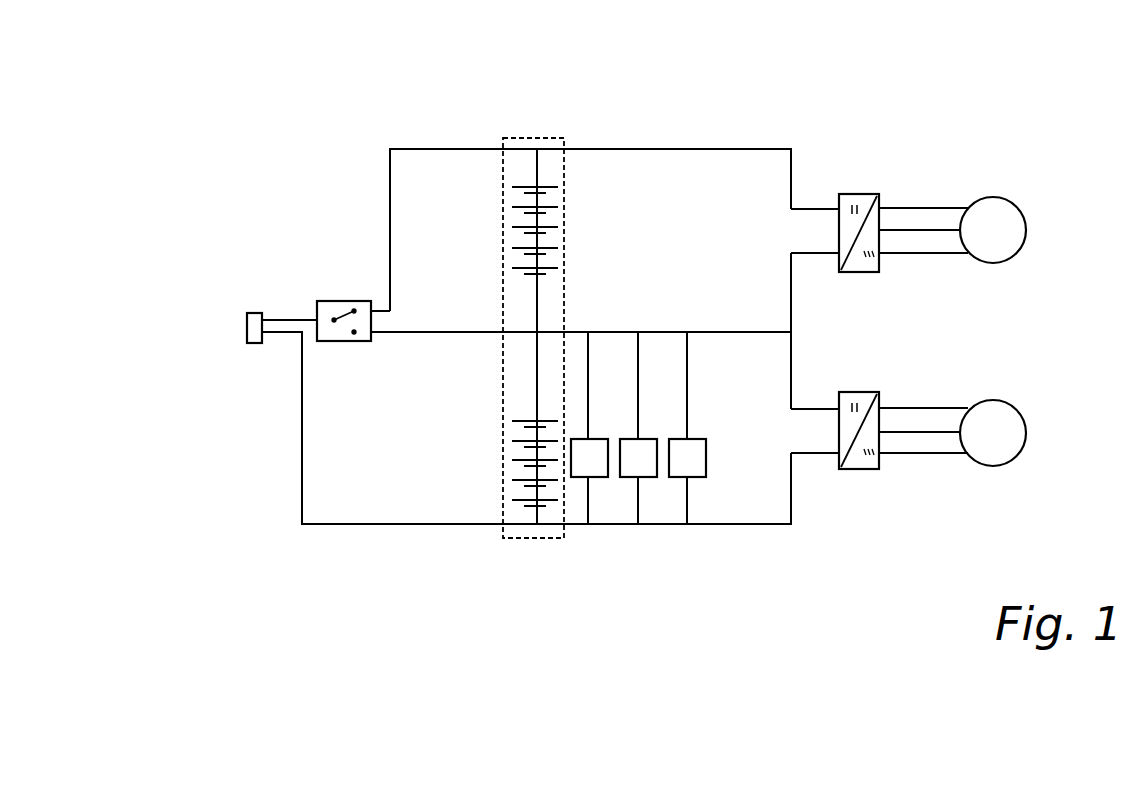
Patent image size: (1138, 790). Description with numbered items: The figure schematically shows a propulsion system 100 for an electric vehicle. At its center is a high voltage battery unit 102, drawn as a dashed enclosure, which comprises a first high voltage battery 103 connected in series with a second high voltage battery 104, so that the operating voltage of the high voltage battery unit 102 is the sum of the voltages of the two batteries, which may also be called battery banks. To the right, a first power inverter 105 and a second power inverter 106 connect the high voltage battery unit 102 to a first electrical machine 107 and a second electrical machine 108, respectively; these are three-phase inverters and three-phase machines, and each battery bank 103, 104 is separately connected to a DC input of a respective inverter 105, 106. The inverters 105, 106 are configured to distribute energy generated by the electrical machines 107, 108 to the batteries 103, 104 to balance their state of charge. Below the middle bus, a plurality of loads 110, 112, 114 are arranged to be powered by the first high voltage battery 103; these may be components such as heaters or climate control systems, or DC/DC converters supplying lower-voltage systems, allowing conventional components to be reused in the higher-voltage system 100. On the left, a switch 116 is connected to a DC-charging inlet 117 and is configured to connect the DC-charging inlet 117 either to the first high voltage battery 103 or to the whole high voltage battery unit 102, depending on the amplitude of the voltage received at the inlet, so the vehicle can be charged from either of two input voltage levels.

The propulsion system 100 is at (777, 87).
The high voltage battery unit 102 is at (548, 137).
The first high voltage battery 103 is at (527, 465).
The second high voltage battery 104 is at (540, 233).
The first power inverter 105 is at (851, 193).
The second power inverter 106 is at (848, 470).
The first electrical machine 107 is at (1026, 225).
The second electrical machine 108 is at (1026, 430).
The load 110 is at (592, 437).
The load 112 is at (645, 437).
The load 114 is at (693, 437).
The switch 116 is at (336, 300).
The DC-charging inlet 117 is at (247, 326).